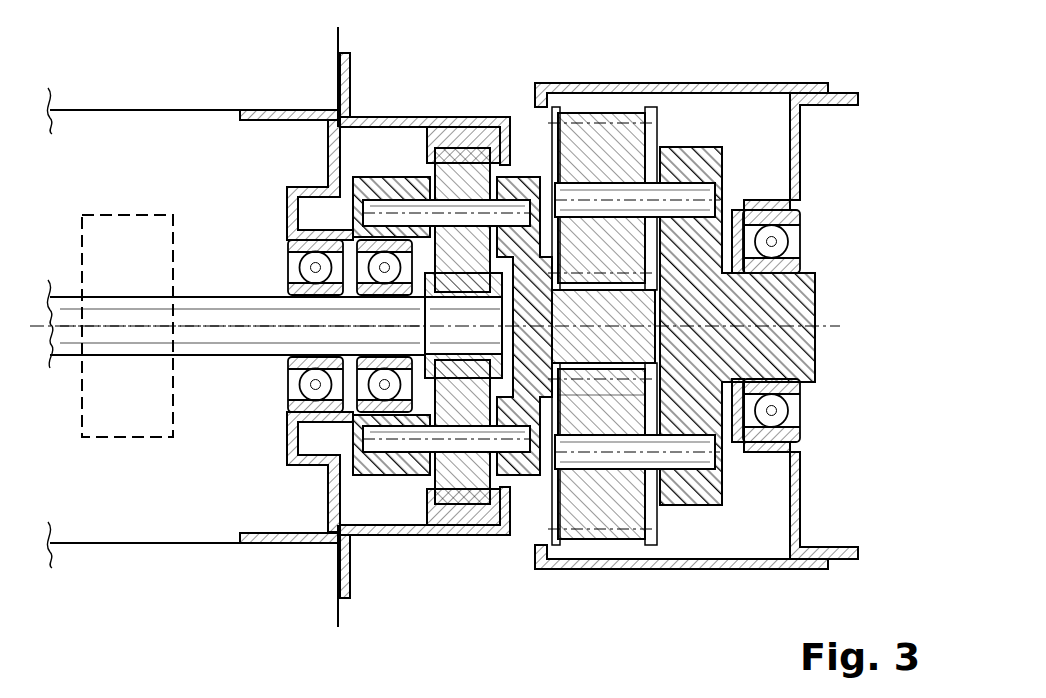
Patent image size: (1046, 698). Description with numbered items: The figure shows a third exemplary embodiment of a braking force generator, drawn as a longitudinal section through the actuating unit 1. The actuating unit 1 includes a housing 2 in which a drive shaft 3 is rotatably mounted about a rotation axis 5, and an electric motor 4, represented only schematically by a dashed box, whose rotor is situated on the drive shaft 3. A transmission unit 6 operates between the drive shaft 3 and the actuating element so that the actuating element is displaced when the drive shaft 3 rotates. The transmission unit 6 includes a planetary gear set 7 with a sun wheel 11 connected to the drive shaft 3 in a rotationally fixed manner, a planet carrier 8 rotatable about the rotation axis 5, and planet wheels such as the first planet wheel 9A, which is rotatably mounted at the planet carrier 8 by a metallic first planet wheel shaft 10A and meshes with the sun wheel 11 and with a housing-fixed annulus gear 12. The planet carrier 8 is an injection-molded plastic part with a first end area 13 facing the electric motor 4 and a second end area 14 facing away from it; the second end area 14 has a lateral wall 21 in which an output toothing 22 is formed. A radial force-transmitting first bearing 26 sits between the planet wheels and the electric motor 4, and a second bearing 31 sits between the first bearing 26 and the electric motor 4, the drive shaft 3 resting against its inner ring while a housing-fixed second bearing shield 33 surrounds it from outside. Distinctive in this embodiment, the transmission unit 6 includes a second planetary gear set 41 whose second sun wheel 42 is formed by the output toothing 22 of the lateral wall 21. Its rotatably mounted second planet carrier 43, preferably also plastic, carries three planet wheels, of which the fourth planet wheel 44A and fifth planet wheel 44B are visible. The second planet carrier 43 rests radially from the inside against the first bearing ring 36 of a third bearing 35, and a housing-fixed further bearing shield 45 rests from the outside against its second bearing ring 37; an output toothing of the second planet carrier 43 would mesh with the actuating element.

The actuating unit 1 is at (393, 568).
The housing 2 is at (140, 110).
The drive shaft 3 is at (187, 310).
The electric motor 4 is at (128, 438).
The rotation axis 5 is at (212, 327).
The transmission unit 6 is at (472, 558).
The planetary gear set 7 is at (477, 100).
The planet carrier 8 is at (513, 173).
The first planet wheel 9A is at (460, 160).
The first planet wheel shaft 10A is at (482, 207).
The sun wheel 11 is at (435, 348).
The annulus gear 12 is at (443, 135).
The first end area 13 is at (388, 143).
The second end area 14 is at (600, 388).
The lateral wall 21 is at (655, 390).
The output toothing 22 is at (633, 363).
The first bearing 26 is at (366, 290).
The second bearing 31 is at (305, 270).
The second bearing shield 33 is at (302, 185).
The third bearing 35 is at (790, 392).
The first bearing ring 36 is at (785, 260).
The second bearing ring 37 is at (790, 436).
The second planetary gear set 41 is at (733, 120).
The second sun wheel 42 is at (642, 343).
The second planet carrier 43 is at (697, 288).
The fourth planet wheel 44A is at (617, 137).
The fifth planet wheel 44B is at (605, 515).
The further bearing shield 45 is at (800, 148).